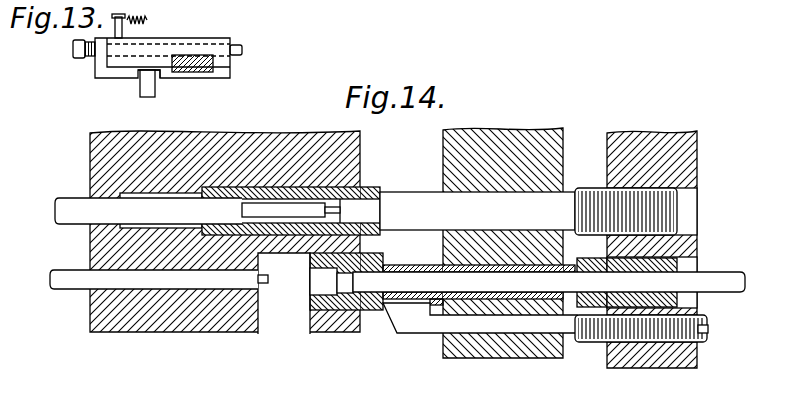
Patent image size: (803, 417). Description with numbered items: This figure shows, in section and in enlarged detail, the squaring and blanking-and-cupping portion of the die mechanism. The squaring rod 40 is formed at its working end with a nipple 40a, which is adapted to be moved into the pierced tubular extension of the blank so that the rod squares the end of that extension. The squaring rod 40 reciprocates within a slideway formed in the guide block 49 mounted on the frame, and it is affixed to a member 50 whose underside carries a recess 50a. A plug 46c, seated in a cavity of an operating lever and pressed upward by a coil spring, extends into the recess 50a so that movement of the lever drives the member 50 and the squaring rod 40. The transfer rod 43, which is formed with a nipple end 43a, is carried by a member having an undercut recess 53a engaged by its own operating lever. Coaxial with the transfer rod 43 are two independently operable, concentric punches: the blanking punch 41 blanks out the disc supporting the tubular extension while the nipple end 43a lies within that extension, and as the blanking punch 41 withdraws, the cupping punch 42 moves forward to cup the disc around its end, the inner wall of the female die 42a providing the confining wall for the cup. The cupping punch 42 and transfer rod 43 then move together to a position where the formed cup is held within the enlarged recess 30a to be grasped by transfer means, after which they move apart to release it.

In FIG. 14, the block 49 is at (92, 156).
In FIG. 14, the squaring rod 40 is at (275, 210).
In FIG. 14, the nipple 40a is at (333, 208).
In FIG. 14, the female die 42a is at (381, 265).
In FIG. 14, the cupping punch 42 is at (368, 283).
In FIG. 14, the blanking punch 41 is at (430, 315).
In FIG. 14, the transfer rod 43 is at (183, 286).
In FIG. 14, the nipple end 43a is at (268, 284).
In FIG. 14, the enlarged recess 30a is at (290, 305).
In FIG. 13, the member 50 is at (95, 72).
In FIG. 13, the recess 50a is at (160, 74).
In FIG. 13, the plug 46c is at (143, 91).
In FIG. 13, the undercut recess 53a is at (172, 56).